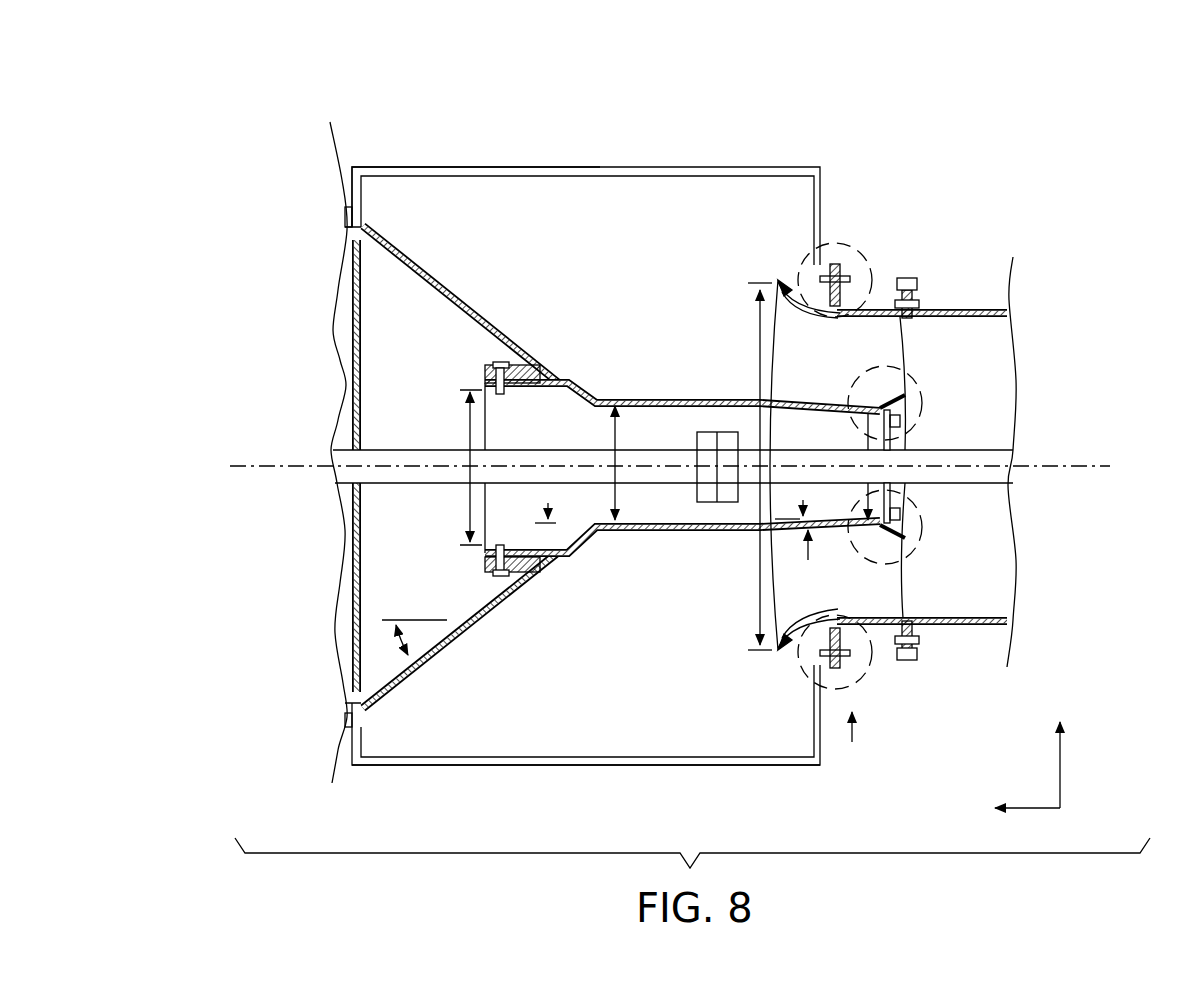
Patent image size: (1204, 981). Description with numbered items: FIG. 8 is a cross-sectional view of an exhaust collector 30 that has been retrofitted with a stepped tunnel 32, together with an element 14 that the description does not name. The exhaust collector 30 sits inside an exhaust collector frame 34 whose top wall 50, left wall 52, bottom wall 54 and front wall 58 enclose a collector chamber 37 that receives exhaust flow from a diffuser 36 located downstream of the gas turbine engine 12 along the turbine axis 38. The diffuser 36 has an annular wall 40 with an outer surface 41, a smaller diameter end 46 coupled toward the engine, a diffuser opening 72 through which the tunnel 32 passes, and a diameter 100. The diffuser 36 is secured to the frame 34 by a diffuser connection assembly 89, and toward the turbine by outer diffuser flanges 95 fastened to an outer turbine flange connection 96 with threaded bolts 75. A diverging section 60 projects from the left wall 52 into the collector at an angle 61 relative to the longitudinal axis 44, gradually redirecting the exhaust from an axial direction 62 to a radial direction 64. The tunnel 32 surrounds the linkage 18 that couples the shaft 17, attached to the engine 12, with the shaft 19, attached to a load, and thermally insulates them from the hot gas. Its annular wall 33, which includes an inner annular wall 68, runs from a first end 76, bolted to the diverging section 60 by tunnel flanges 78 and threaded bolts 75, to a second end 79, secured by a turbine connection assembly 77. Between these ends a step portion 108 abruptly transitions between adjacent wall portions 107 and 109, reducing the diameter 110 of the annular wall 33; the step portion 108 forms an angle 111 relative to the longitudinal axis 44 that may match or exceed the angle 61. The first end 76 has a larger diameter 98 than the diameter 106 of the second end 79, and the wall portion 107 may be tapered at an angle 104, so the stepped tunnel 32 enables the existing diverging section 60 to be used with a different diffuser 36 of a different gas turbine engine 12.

The gas turbine engine 12 is at (926, 462).
The gas turbine engine 14 is at (458, 73).
The shaft 17 is at (1010, 500).
The linkage 18 is at (748, 510).
The shaft 19 is at (386, 490).
The exhaust collector 30 is at (316, 96).
The tunnel 32 is at (630, 400).
The annular wall 33 is at (790, 403).
The exhaust collector frame 34 is at (456, 168).
The diffuser 36 is at (870, 332).
The collector chamber 37 is at (600, 676).
The turbine axis 38 is at (1037, 415).
The annular wall 40 is at (792, 240).
The outer surface 41 is at (786, 288).
The longitudinal axis 44 is at (272, 478).
The smaller diameter end 46 is at (853, 738).
The top wall 50 is at (710, 168).
The left wall 52 is at (355, 778).
The bottom wall 54 is at (460, 765).
The front wall 58 is at (400, 190).
The diverging section 60 is at (455, 303).
The angle 61 is at (385, 647).
The axial direction 62 is at (1045, 806).
The radial direction 64 is at (1065, 785).
The inner annular wall 68 is at (702, 408).
The diffuser opening 72 is at (733, 285).
The threaded bolts 75 is at (498, 368).
The first end 76 is at (442, 517).
The turbine connection assembly 77 is at (922, 405).
The tunnel flanges 78 is at (440, 365).
The second end 79 is at (938, 566).
The diffuser connection assembly 89 is at (845, 248).
The outer diffuser flanges 95 is at (898, 280).
The outer turbine flange connection 96 is at (914, 280).
The diameter 98 is at (468, 432).
The diameter 100 is at (758, 625).
The angle 104 is at (808, 555).
The diameter 106 is at (866, 458).
The wall portion 107 is at (548, 380).
The step portion 108 is at (587, 346).
The wall portion 109 is at (828, 405).
The diameter 110 is at (620, 472).
The angle 111 is at (568, 566).